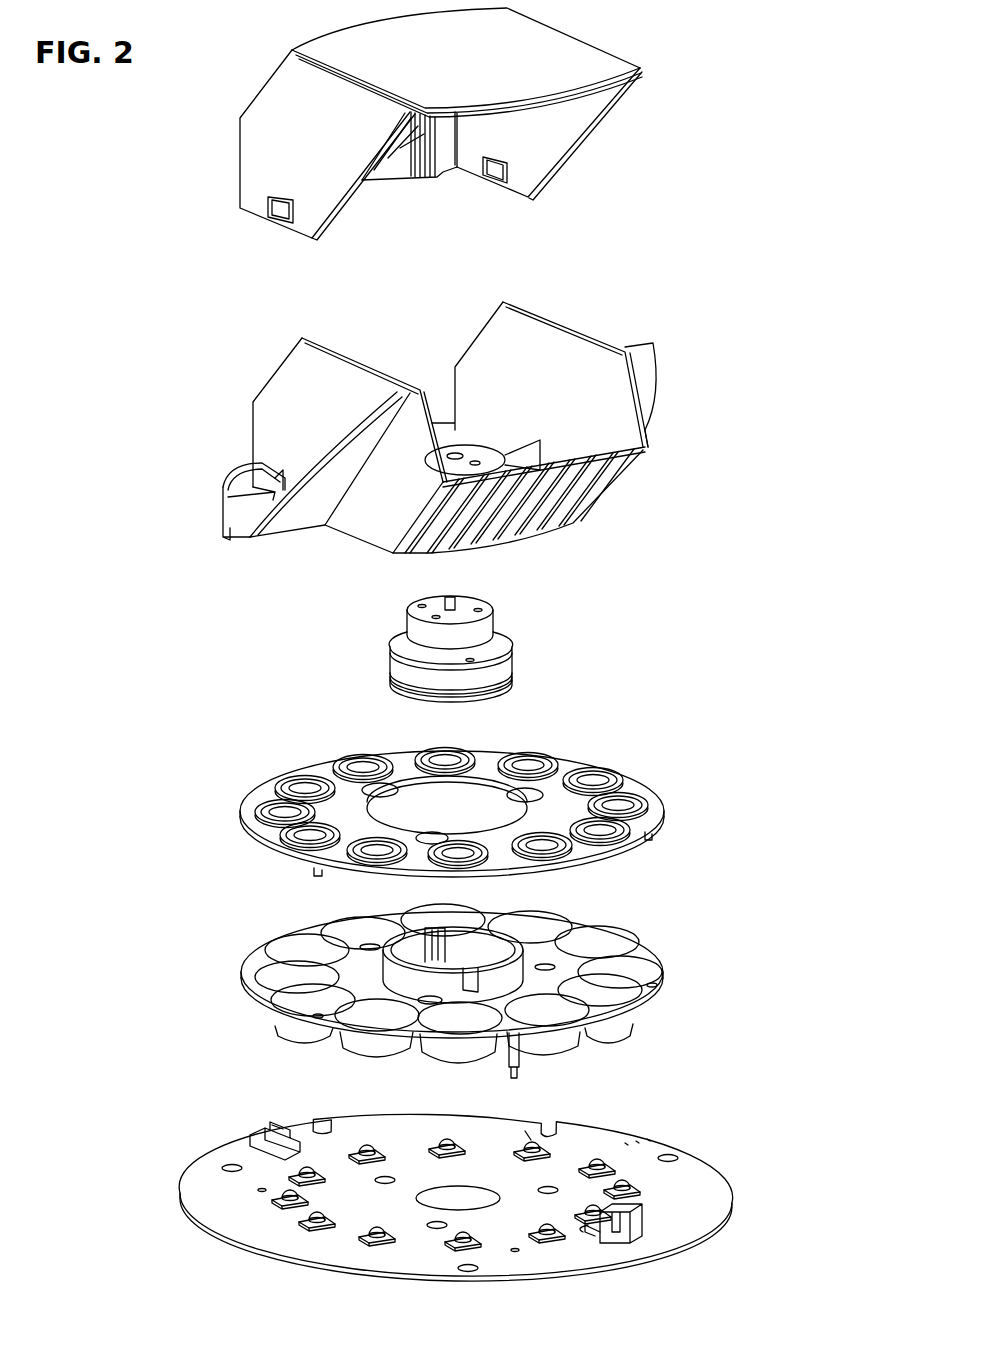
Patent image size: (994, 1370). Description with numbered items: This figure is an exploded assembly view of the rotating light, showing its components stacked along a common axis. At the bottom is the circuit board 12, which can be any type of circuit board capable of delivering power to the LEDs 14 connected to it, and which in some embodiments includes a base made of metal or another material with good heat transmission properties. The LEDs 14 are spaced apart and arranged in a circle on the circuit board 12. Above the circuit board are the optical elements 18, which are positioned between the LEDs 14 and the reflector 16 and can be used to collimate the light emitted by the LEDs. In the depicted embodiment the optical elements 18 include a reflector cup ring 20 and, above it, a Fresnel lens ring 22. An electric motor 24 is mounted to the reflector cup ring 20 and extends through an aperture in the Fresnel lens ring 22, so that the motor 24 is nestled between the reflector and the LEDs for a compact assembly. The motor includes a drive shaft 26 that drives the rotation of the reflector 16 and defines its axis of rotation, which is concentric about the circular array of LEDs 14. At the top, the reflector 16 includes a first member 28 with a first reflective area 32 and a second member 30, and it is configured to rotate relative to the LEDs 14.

The circuit board 12 is at (745, 1165).
The LEDs 14 is at (597, 1160).
The reflector 16 is at (265, 24).
The optical elements 18 is at (686, 732).
The reflector cup ring 20 is at (228, 972).
The Fresnel lens ring 22 is at (228, 818).
The electric motor 24 is at (515, 658).
The drive shaft 26 is at (466, 603).
The first member 28 is at (662, 368).
The second member 30 is at (614, 107).
The first reflective area 32 is at (612, 470).